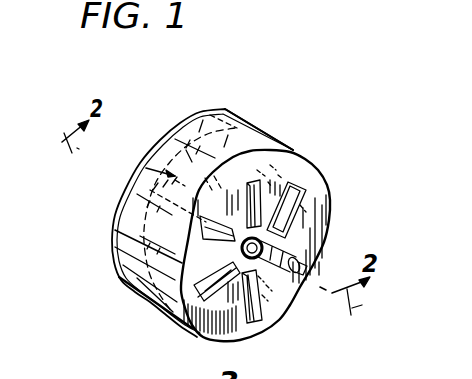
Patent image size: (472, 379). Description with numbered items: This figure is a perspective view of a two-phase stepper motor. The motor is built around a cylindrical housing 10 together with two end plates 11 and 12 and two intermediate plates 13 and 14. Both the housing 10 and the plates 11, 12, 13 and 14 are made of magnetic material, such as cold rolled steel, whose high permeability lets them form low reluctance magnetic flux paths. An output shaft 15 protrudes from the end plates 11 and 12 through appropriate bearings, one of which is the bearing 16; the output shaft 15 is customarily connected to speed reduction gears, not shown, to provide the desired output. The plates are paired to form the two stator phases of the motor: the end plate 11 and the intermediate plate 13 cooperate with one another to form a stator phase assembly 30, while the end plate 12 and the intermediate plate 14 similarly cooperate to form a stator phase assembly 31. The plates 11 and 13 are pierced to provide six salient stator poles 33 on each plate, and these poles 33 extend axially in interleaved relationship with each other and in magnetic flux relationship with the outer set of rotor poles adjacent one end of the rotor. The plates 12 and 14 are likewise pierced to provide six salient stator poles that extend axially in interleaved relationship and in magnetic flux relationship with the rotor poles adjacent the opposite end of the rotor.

The cylindrical housing 10 is at (278, 140).
The end plate 11 is at (329, 197).
The end plate 12 is at (110, 213).
The intermediate plate 13 is at (250, 113).
The intermediate plate 14 is at (135, 163).
The output shaft 15 is at (263, 251).
The bearing 16 is at (265, 236).
The stator phase assembly 30 is at (278, 311).
The stator phase assembly 31 is at (110, 248).
The salient stator poles 33 is at (180, 326).